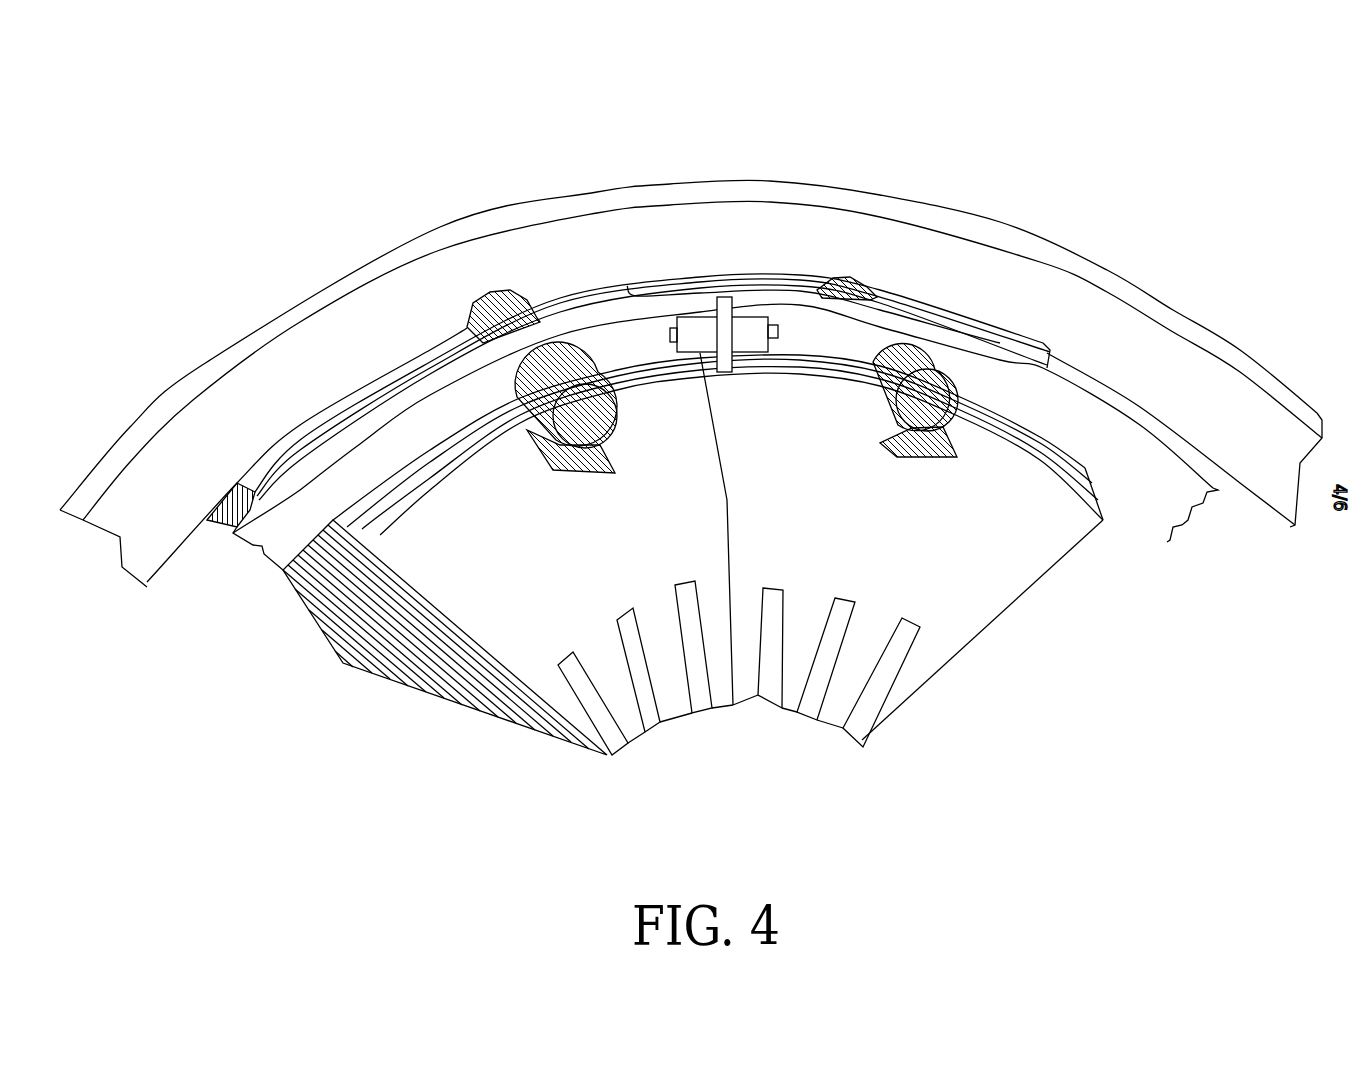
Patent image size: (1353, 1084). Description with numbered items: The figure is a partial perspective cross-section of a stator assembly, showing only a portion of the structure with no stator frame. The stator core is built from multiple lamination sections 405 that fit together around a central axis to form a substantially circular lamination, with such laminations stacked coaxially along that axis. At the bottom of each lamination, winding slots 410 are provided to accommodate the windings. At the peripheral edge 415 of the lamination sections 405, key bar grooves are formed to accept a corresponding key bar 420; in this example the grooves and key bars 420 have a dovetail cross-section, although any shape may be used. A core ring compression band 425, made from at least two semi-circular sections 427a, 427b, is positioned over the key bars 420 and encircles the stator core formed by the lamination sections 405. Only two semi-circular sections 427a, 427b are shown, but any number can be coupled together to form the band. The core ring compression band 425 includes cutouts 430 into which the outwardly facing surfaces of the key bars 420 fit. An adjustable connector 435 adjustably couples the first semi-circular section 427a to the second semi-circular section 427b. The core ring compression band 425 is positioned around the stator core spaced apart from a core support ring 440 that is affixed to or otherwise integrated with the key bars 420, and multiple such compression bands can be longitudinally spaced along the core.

The lamination section 405 is at (955, 542).
The winding slot 410 is at (668, 733).
The peripheral edge 415 is at (1030, 468).
The key bar 420 is at (893, 456).
The core ring compression band 425 is at (268, 558).
The first semi-circular section 427a is at (493, 370).
The second semi-circular section 427b is at (1047, 383).
The cutout 430 is at (592, 372).
The adjustable connector 435 is at (747, 327).
The core support ring 440 is at (365, 302).